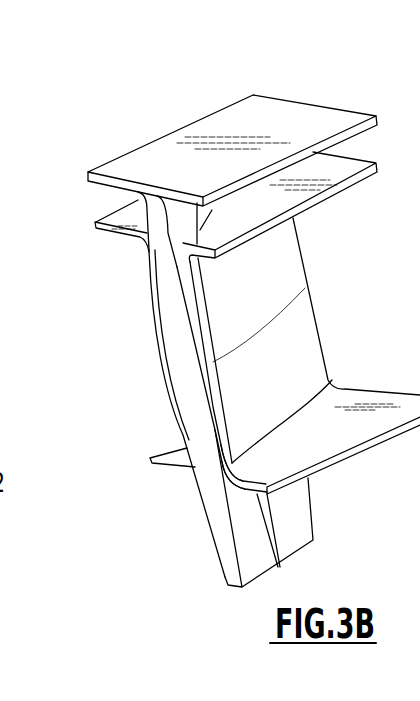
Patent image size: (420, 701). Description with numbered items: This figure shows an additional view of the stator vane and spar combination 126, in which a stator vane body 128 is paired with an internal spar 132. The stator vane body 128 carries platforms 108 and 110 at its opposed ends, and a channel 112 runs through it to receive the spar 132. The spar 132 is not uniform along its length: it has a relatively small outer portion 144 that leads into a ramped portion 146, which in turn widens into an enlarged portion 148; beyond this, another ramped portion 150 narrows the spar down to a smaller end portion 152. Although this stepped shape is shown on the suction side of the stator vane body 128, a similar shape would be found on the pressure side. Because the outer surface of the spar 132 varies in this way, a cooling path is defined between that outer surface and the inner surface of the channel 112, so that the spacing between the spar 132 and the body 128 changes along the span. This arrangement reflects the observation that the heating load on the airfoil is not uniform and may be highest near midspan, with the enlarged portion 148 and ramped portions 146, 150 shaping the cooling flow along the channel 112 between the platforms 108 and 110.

The combination 126 is at (335, 93).
The channel 112 is at (205, 205).
The platform 108 is at (123, 223).
The outer portion 144 is at (173, 223).
The spar 132 is at (168, 335).
The ramped portion 146 is at (158, 320).
The enlarged portion 148 is at (198, 343).
The stator vane body 128 is at (293, 337).
The platform 110 is at (171, 454).
The ramped portion 150 is at (222, 455).
The end portion 152 is at (233, 500).